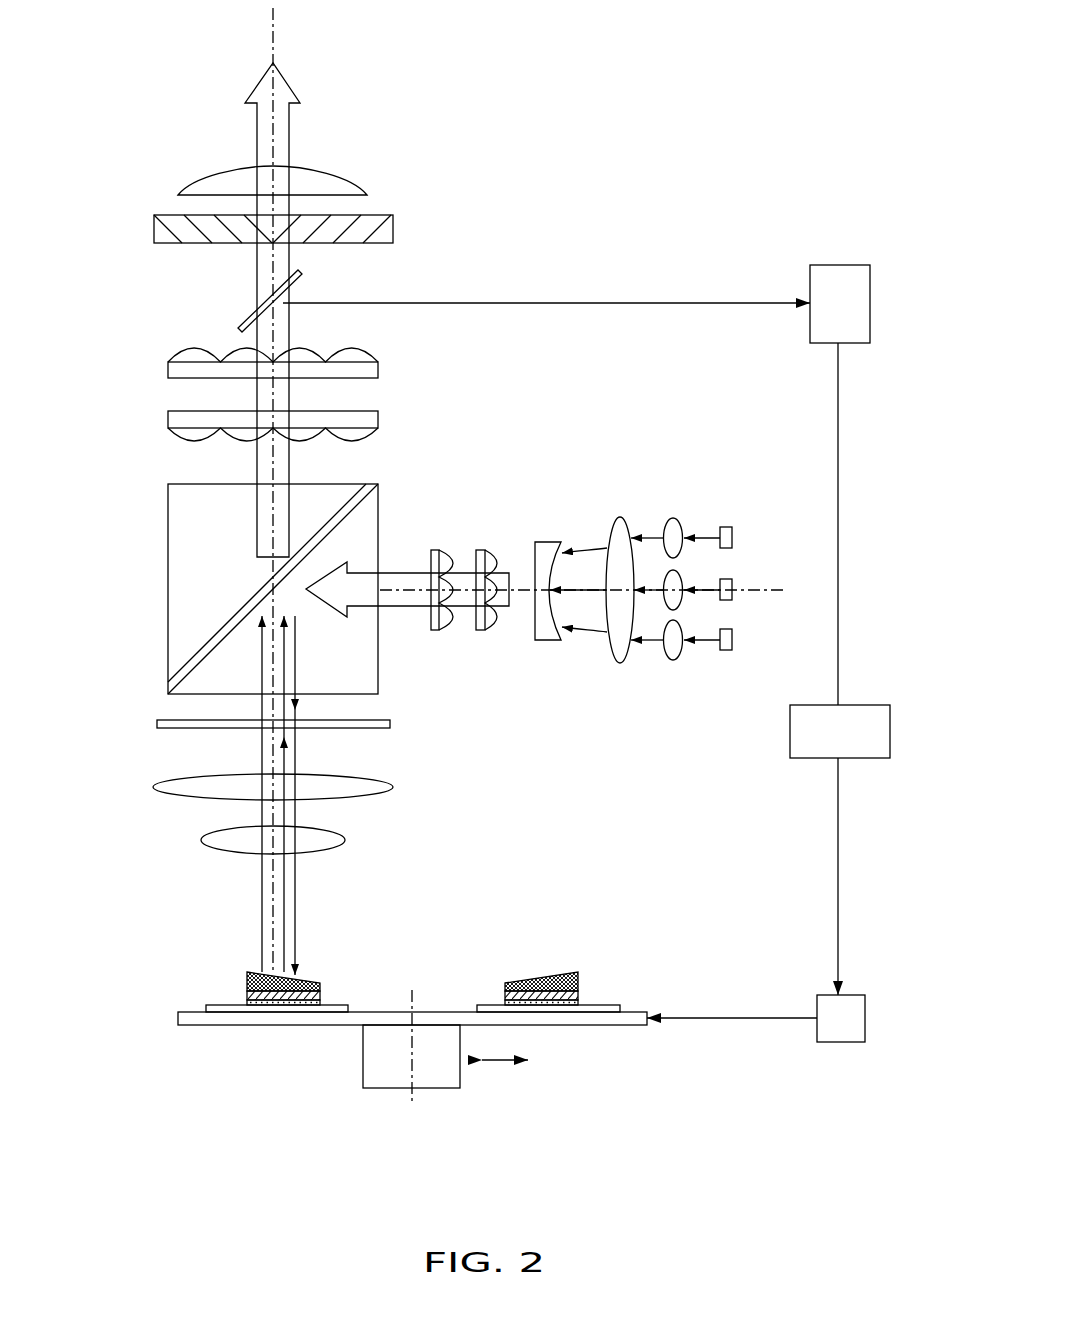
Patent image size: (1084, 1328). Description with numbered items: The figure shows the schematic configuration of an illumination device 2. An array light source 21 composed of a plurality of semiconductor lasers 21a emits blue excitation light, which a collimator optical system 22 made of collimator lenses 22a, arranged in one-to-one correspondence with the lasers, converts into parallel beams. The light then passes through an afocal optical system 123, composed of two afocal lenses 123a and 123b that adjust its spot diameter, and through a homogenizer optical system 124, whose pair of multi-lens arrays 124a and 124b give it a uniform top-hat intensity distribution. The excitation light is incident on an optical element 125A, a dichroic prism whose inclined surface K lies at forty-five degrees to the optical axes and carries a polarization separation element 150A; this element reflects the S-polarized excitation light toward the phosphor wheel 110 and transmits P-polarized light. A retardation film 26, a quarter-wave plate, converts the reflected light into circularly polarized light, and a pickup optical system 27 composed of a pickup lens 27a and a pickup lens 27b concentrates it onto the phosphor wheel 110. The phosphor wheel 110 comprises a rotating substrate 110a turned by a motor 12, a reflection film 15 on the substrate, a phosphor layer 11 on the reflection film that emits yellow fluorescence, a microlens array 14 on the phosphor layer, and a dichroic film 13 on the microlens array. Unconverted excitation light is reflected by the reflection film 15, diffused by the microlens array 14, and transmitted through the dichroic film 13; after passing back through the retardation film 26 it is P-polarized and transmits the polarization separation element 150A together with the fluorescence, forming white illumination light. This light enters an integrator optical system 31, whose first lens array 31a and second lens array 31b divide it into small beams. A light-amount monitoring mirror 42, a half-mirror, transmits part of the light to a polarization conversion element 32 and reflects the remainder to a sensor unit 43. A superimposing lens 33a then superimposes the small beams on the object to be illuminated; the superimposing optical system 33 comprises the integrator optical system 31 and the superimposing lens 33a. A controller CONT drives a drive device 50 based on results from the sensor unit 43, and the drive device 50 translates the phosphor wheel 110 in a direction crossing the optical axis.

The illumination device 2 is at (681, 104).
The phosphor layer 11 is at (585, 1002).
The motor 12 is at (460, 1077).
The dichroic film 13 is at (566, 972).
The microlens array 14 is at (580, 995).
The reflection film 15 is at (605, 1008).
The array light source 21 is at (726, 515).
The semiconductor laser 21a is at (723, 652).
The collimator optical system 22 is at (675, 512).
The collimator lens 22a is at (672, 661).
The retardation film 26 is at (390, 725).
The pickup optical system 27 is at (338, 803).
The pickup lens 27a is at (393, 787).
The pickup lens 27b is at (345, 840).
The integrator optical system 31 is at (338, 386).
The first lens array 31a is at (378, 419).
The second lens array 31b is at (378, 370).
The polarization conversion element 32 is at (393, 229).
The superimposing optical system 33 is at (277, 145).
The superimposing lens 33a is at (367, 184).
The light-amount monitoring mirror 42 is at (246, 317).
The sensor unit 43 is at (830, 283).
The drive device 50 is at (838, 1031).
The phosphor wheel 110 is at (166, 1018).
The rotating substrate 110a is at (213, 1021).
The afocal optical system 123 is at (591, 539).
The afocal lens 123a is at (620, 517).
The afocal lens 123b is at (548, 540).
The homogenizer optical system 124 is at (461, 542).
The multi-lens array 124a is at (480, 548).
The multi-lens array 124b is at (433, 548).
The optical element 125A is at (226, 589).
The polarization separation element 150A is at (168, 517).
The inclined surface K is at (240, 620).
The controller CONT is at (866, 722).